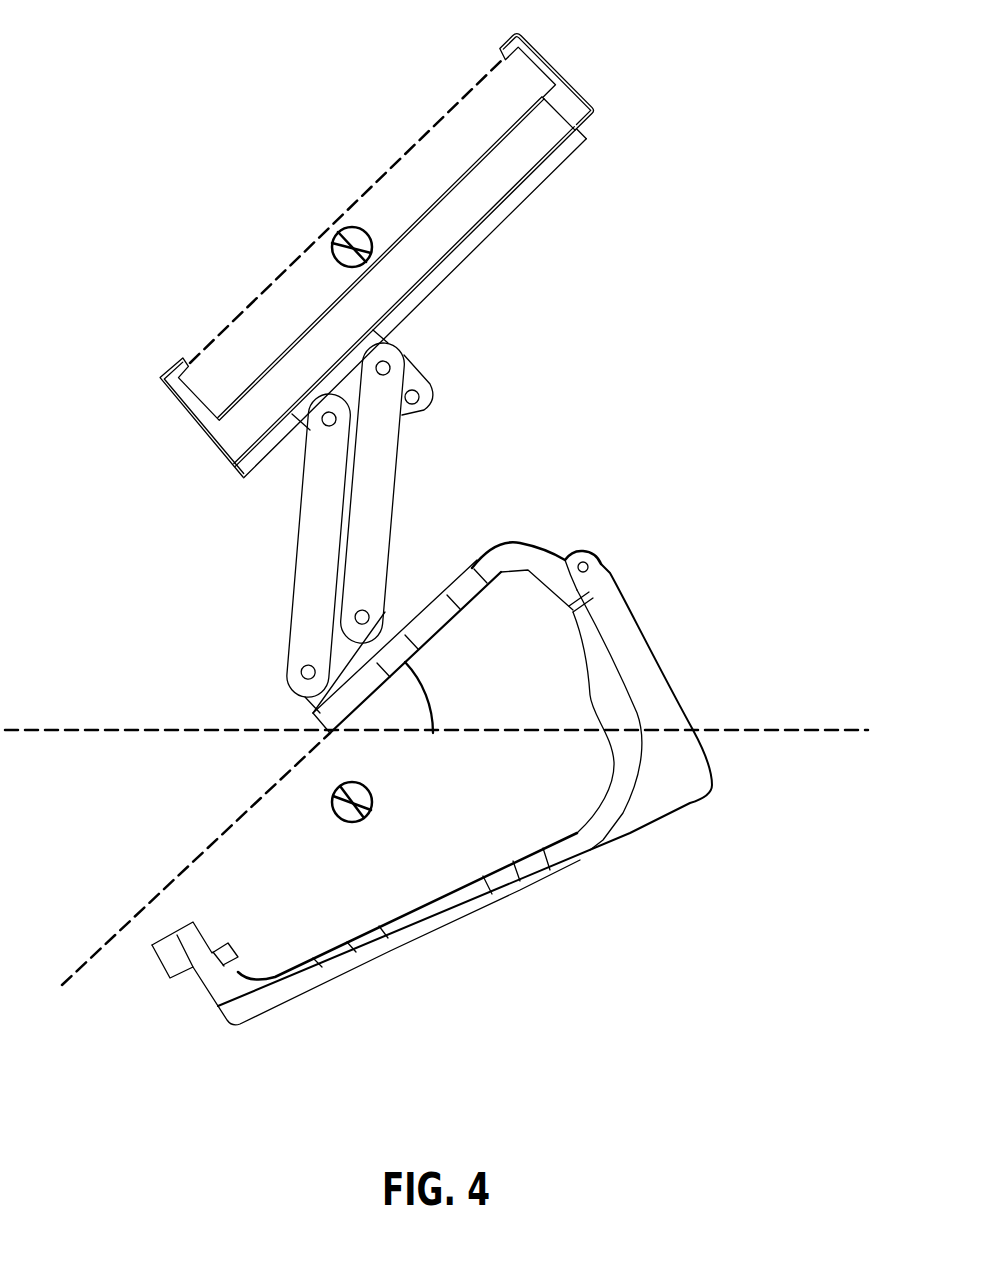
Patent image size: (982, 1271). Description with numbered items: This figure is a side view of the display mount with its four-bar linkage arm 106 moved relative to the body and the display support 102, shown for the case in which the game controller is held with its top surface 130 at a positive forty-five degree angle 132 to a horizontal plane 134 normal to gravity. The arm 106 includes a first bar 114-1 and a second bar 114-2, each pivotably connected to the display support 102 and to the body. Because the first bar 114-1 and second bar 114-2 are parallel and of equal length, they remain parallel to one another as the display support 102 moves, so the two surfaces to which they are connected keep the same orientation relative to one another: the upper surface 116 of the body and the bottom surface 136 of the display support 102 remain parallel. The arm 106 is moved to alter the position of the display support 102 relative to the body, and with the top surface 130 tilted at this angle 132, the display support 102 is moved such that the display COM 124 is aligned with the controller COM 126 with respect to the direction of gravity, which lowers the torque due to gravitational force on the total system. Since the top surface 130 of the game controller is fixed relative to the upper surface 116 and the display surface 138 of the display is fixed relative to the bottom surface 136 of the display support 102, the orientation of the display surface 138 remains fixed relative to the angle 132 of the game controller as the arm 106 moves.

The display support 102 is at (378, 253).
The arm 106 is at (245, 638).
The first bar 114-1 is at (307, 528).
The second bar 114-2 is at (383, 488).
The upper surface 116 is at (418, 610).
The display COM 124 is at (332, 240).
The controller COM 126 is at (372, 813).
The top surface 130 is at (473, 602).
The angle 132 is at (438, 690).
The horizontal plane 134 is at (828, 728).
The bottom surface 136 is at (458, 263).
The display surface 138 is at (430, 132).